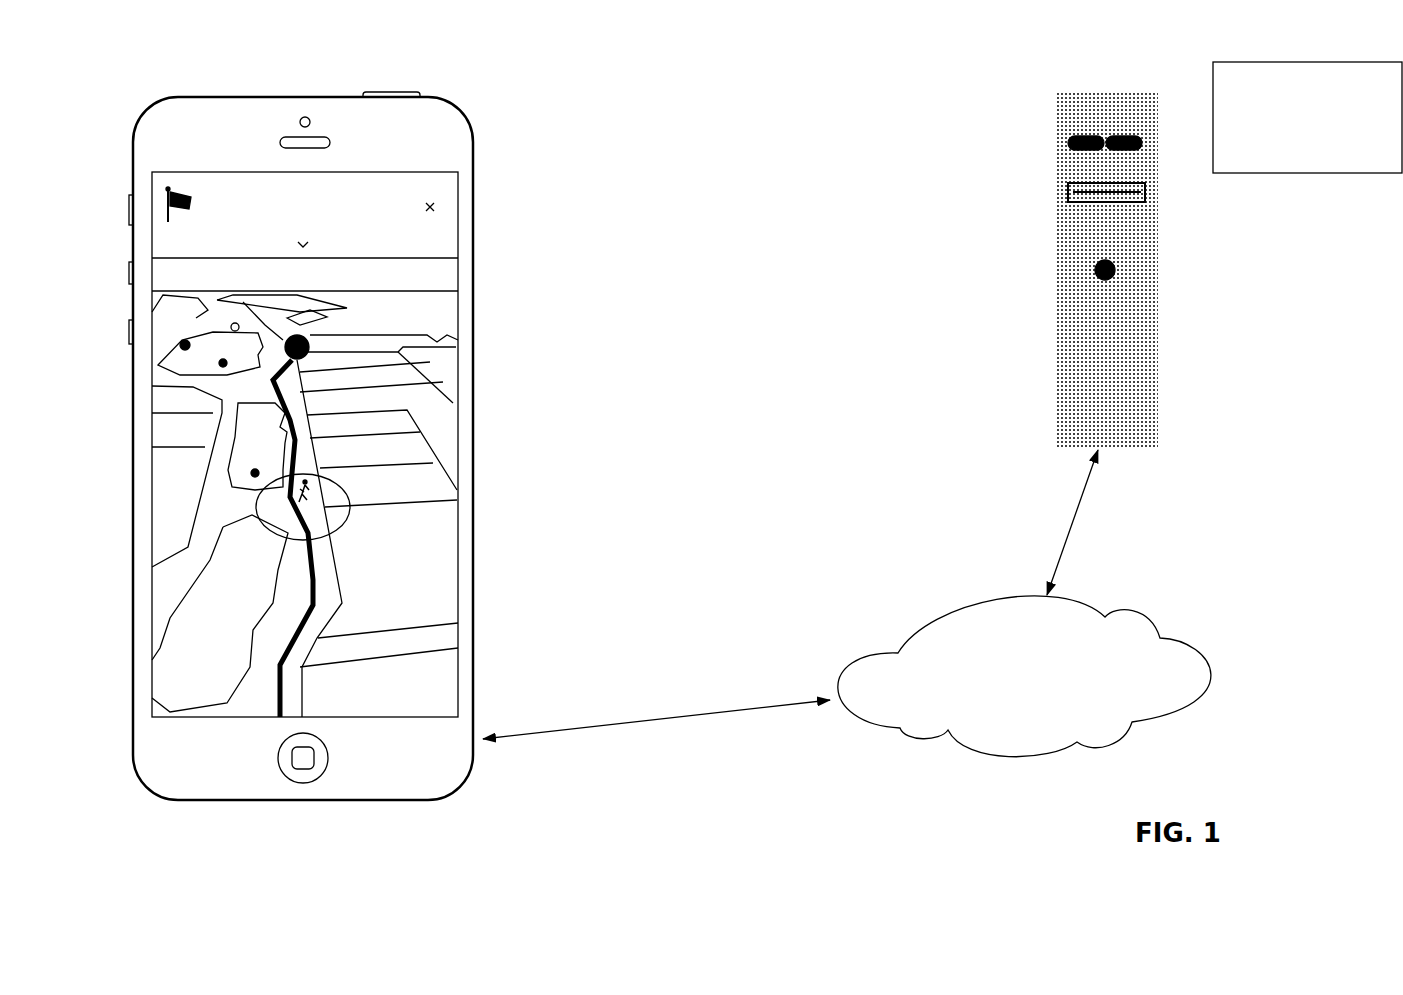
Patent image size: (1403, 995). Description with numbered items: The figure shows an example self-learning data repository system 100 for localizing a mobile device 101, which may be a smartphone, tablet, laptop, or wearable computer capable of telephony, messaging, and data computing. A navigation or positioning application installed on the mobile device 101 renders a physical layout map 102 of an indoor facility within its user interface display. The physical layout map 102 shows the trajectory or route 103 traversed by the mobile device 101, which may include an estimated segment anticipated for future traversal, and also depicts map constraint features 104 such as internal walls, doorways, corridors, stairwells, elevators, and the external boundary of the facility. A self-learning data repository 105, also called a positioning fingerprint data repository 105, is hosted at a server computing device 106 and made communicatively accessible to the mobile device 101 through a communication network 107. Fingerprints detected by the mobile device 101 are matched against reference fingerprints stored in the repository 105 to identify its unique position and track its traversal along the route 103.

The self-learning data repository system 100 is at (817, 90).
The mobile device 101 is at (416, 145).
The physical layout map 102 is at (227, 667).
The trajectory or route 103 is at (313, 607).
The map constraint features 104 is at (432, 448).
The self-learning data repository 105 is at (1158, 165).
The server computing device 106 is at (1118, 342).
The communication network 107 is at (1018, 723).